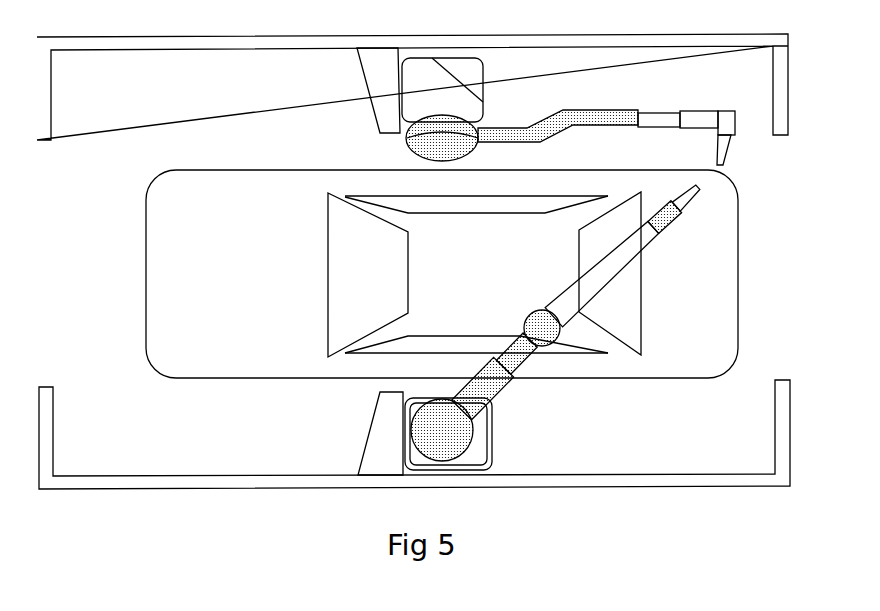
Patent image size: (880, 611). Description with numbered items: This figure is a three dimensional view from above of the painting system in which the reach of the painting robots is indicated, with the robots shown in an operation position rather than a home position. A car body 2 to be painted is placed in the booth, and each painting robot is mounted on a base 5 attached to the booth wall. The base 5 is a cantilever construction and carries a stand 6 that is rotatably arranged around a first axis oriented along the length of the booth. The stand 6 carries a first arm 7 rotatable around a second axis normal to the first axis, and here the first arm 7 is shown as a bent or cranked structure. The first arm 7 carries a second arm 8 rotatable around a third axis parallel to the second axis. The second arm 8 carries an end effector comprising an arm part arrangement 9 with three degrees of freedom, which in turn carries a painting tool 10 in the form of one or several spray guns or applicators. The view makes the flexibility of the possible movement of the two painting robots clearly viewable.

The car body 2 is at (177, 365).
The base 5 is at (378, 440).
The stand 6 is at (453, 447).
The first arm 7 is at (493, 398).
The second arm 8 is at (575, 303).
The arm part arrangement 9 is at (670, 220).
The painting tool 10 is at (730, 150).